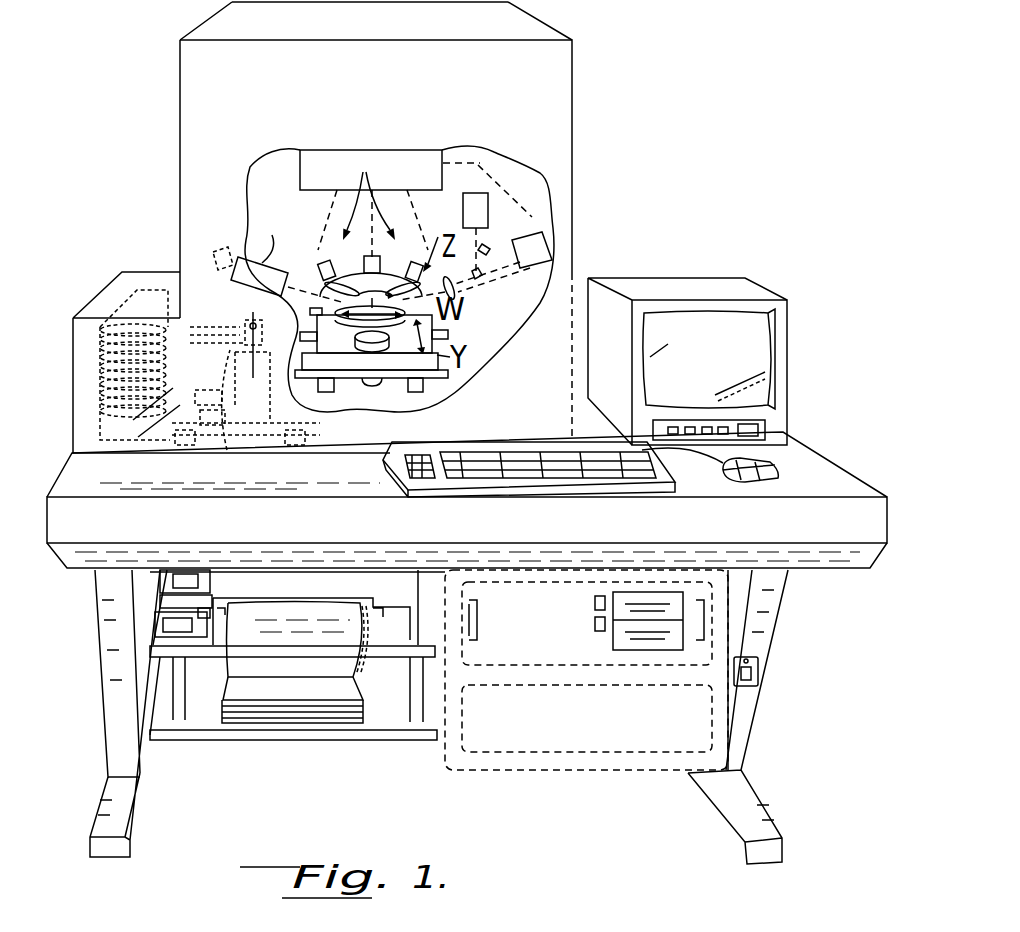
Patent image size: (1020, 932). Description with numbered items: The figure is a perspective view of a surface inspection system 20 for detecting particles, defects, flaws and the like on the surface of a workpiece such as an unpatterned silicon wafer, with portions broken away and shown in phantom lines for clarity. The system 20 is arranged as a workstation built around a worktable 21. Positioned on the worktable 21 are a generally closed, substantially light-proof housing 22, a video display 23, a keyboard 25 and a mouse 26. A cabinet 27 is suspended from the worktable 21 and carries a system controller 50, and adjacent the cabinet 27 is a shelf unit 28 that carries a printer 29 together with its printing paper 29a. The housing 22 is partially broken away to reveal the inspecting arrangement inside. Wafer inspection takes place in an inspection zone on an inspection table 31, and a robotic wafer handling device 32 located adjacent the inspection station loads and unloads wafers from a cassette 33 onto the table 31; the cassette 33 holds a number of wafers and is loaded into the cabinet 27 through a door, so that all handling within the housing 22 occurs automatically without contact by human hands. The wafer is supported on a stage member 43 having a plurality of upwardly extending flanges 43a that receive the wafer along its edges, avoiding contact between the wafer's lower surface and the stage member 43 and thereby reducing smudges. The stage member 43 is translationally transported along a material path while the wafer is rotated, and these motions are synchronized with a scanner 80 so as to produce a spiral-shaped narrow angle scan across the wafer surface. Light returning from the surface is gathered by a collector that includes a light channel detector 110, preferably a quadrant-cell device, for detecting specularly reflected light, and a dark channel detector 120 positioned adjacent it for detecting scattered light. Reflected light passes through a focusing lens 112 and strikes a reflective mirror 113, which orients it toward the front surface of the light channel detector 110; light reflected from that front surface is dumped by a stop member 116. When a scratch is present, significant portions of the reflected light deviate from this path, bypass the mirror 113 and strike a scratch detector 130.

The surface inspection system 20 is at (108, 248).
The worktable 21 is at (100, 472).
The housing 22 is at (562, 68).
The video display 23 is at (786, 352).
The keyboard 25 is at (676, 484).
The mouse 26 is at (780, 474).
The cabinet 27 is at (601, 697).
The shelf unit 28 is at (200, 650).
The printer 29 is at (315, 689).
The printing paper 29a is at (295, 705).
The inspection table 31 is at (450, 298).
The robotic wafer handling device 32 is at (228, 452).
The cassette 33 is at (102, 308).
The stage member 43 is at (333, 320).
The flanges 43a is at (400, 330).
The system controller 50 is at (588, 630).
The scanner 80 is at (215, 255).
The light channel detector 110 is at (480, 204).
The focusing lens 112 is at (490, 333).
The reflective mirror 113 is at (482, 279).
The stop member 116 is at (486, 247).
The dark channel detector 120 is at (416, 204).
The scratch detector 130 is at (536, 250).